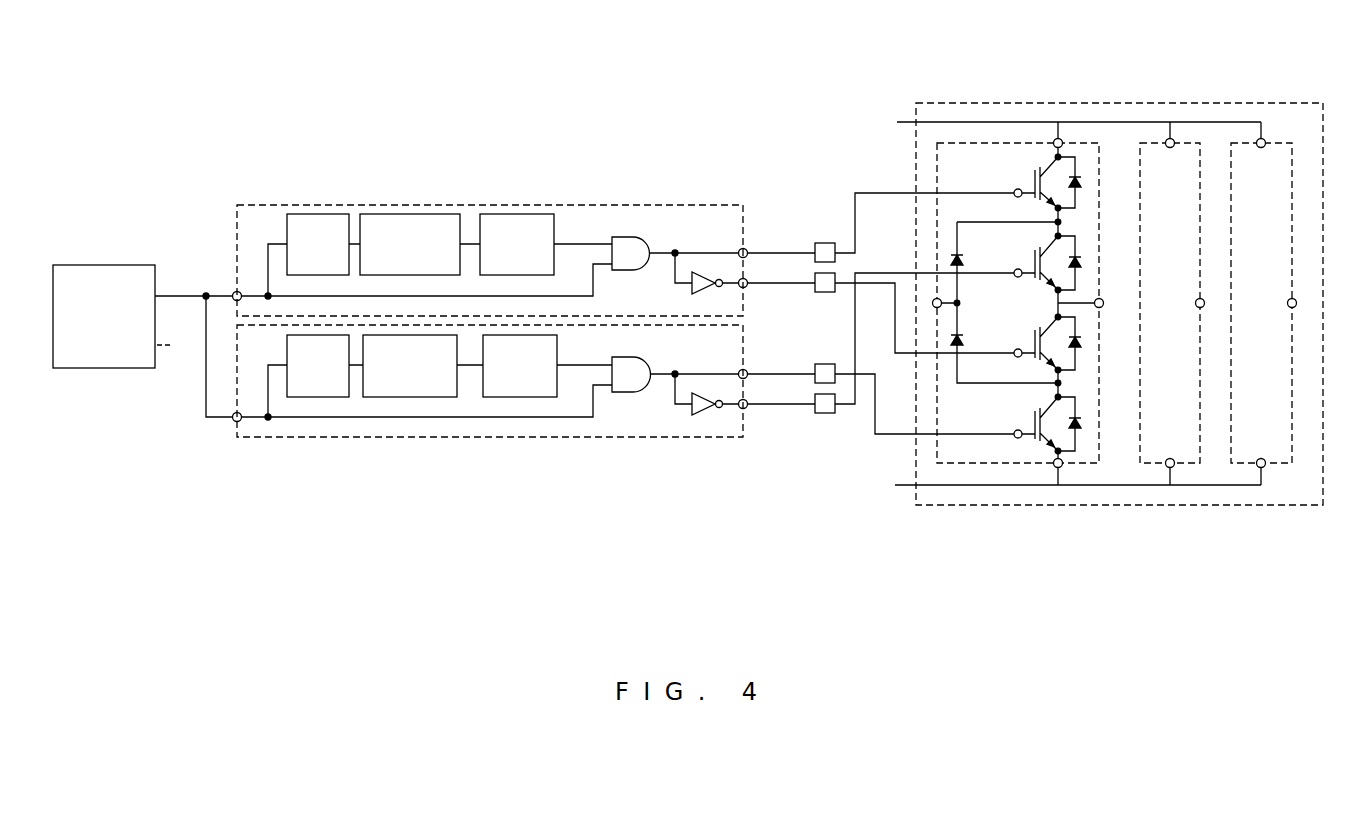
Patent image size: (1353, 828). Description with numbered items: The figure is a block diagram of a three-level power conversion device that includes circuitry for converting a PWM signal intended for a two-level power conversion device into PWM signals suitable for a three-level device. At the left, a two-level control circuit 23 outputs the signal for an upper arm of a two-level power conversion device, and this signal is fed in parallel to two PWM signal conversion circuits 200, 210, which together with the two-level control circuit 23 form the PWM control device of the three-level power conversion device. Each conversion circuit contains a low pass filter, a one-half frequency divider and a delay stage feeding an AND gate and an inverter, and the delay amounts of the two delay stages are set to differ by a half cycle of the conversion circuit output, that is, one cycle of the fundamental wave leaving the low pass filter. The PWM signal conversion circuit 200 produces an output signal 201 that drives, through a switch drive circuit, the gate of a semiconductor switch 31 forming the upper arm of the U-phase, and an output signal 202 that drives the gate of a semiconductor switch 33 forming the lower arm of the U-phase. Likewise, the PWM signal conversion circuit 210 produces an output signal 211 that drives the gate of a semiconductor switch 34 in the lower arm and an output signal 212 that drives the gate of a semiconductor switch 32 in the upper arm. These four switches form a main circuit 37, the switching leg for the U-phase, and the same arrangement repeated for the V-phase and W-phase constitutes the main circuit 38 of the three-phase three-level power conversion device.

The two-level control circuit 23 is at (107, 263).
The PWM signal conversion circuit 200 is at (522, 203).
The PWM signal conversion circuit 210 is at (477, 438).
The output signal 201 is at (748, 251).
The output signal 202 is at (748, 286).
The output signal 211 is at (748, 372).
The output signal 212 is at (748, 407).
The semiconductor switch 31 is at (1027, 183).
The semiconductor switch 32 is at (1027, 263).
The semiconductor switch 33 is at (1027, 343).
The semiconductor switch 34 is at (1027, 424).
The main circuit 37 is at (962, 140).
The main circuit 38 is at (1017, 100).